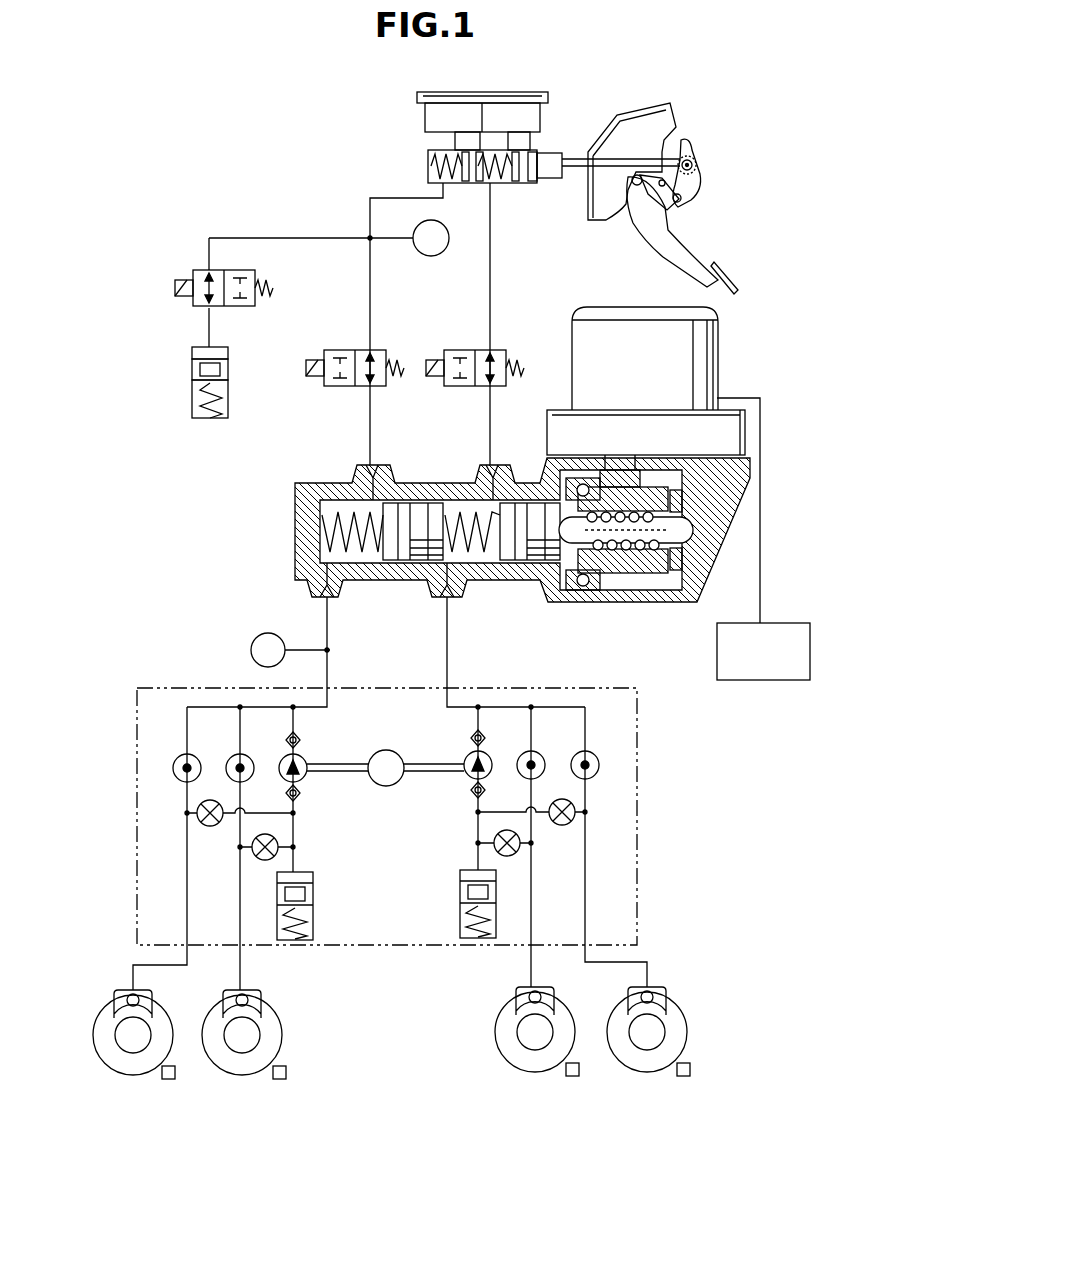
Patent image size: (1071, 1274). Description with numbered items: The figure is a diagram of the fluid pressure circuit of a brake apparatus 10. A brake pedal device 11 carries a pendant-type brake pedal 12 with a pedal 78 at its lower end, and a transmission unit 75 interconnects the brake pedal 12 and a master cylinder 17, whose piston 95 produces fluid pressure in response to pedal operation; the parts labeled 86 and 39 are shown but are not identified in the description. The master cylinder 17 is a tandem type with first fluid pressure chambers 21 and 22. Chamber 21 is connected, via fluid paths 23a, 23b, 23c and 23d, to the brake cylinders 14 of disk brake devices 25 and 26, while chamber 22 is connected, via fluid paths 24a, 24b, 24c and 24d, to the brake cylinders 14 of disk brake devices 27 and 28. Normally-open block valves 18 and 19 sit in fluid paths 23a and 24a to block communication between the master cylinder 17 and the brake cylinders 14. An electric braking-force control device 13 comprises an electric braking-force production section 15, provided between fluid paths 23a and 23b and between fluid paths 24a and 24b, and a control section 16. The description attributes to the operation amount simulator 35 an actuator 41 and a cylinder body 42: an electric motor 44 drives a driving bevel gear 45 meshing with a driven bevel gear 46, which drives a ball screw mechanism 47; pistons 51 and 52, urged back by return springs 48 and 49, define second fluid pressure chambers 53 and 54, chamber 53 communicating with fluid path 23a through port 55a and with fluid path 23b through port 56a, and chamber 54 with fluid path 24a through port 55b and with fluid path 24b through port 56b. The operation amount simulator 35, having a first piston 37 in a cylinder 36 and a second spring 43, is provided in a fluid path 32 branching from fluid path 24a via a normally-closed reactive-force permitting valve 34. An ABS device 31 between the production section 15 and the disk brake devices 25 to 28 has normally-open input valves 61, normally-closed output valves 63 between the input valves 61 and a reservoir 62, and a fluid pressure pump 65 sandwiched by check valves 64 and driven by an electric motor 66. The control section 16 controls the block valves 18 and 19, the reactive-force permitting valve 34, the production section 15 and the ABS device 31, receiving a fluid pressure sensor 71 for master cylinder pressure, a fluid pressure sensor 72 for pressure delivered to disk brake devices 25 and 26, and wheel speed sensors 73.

The brake apparatus 10 is at (268, 145).
The brake pedal device 11 is at (694, 130).
The brake pedal 12 is at (672, 245).
The electric braking-force control device 13 is at (776, 492).
The brake cylinders 14 is at (113, 995).
The electric braking-force production section 15 is at (742, 322).
The control section 16 is at (775, 685).
The master cylinder 17 is at (425, 163).
The block valve 18 is at (495, 350).
The block valve 19 is at (375, 350).
The first fluid pressure chamber 21 is at (505, 185).
The first fluid pressure chamber 22 is at (445, 185).
The fluid path 23a is at (490, 278).
The fluid path 23b is at (450, 626).
The fluid path 23c is at (585, 868).
The fluid path 23d is at (531, 925).
The fluid path 24a is at (370, 278).
The fluid path 24b is at (330, 626).
The fluid path 24c is at (240, 873).
The fluid path 24d is at (187, 903).
The disk brake device 25 is at (496, 1032).
The disk brake device 26 is at (687, 1032).
The disk brake device 27 is at (283, 1035).
The disk brake device 28 is at (94, 1035).
The ABS device 31 is at (185, 685).
The fluid path 32 is at (287, 238).
The reactive-force permitting valve 34 is at (193, 268).
The operation amount simulator 35 is at (190, 370).
The cylinder 36 is at (192, 408).
The first piston 37 is at (228, 372).
The simulator cylinder cap 39 is at (192, 347).
The actuator 41 is at (735, 380).
The cylinder body 42 is at (292, 528).
The second spring 43 is at (216, 420).
The electric motor 44 is at (640, 330).
The driving bevel gear 45 is at (660, 478).
The driven bevel gear 46 is at (638, 588).
The ball screw mechanism 47 is at (604, 585).
The return spring 48 is at (470, 508).
The return spring 49 is at (345, 505).
The piston 51 is at (530, 510).
The piston 52 is at (415, 508).
The second fluid pressure chamber 53 is at (480, 560).
The second fluid pressure chamber 54 is at (360, 560).
The port 55a is at (495, 465).
The port 55b is at (373, 465).
The port 56a is at (447, 600).
The port 56b is at (322, 590).
The input valves 61 is at (187, 754).
The reservoir 62 is at (313, 892).
The output valves 63 is at (200, 810).
The check valves 64 is at (302, 738).
The fluid pressure pump 65 is at (307, 762).
The electric motor 66 is at (386, 786).
The fluid pressure sensor 71 is at (432, 250).
The fluid pressure sensor 72 is at (265, 643).
The wheel speed sensors 73 is at (176, 1076).
The transmission unit 75 is at (705, 158).
The pedal 78 is at (730, 275).
The pedal bracket 86 is at (650, 155).
The piston 95 is at (555, 157).